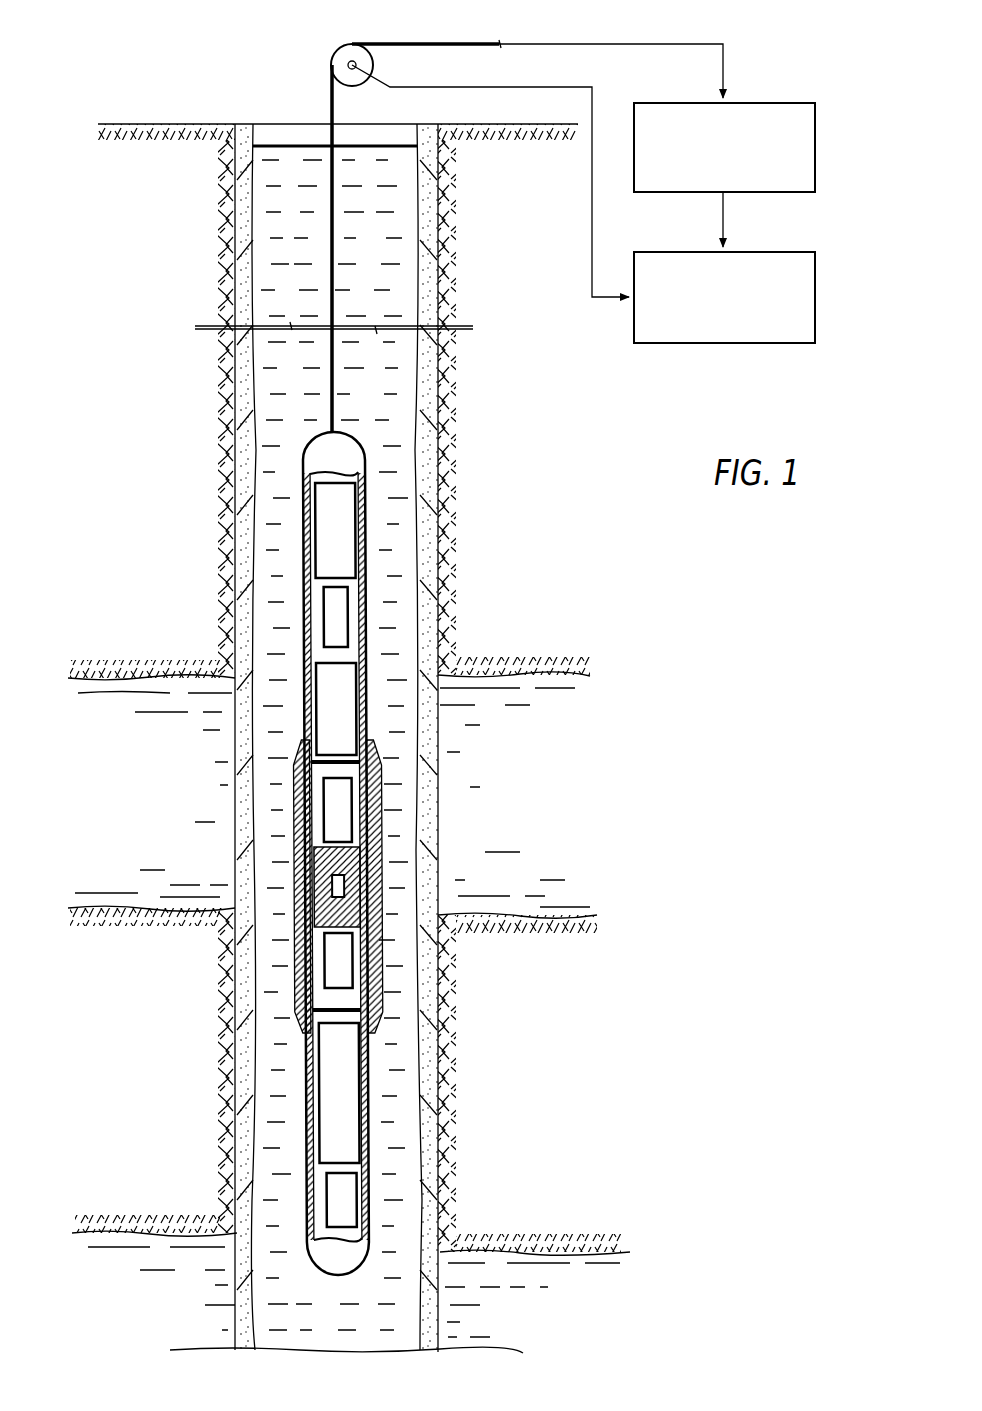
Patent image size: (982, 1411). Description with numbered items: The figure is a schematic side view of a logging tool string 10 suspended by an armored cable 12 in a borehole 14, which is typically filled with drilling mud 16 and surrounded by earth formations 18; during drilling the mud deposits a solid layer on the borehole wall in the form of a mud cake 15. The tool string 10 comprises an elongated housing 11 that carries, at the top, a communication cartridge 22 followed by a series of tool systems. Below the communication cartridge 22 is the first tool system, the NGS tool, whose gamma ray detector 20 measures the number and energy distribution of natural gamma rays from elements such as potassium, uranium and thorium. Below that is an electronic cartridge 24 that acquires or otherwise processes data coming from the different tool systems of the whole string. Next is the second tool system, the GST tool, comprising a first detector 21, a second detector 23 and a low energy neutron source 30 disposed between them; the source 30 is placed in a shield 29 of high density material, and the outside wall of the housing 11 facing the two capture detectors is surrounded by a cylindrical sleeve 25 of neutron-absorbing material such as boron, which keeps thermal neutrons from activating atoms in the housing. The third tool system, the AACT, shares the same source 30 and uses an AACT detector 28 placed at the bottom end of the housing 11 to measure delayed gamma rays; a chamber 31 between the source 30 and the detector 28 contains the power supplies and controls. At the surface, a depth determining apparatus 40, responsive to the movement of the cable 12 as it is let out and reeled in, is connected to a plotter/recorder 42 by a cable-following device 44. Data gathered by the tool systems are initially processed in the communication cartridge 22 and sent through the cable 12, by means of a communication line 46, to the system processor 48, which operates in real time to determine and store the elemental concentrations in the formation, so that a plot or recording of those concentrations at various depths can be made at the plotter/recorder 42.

The logging tool string 10 is at (331, 838).
The elongated housing 11 is at (367, 482).
The armored cable 12 is at (330, 220).
The borehole 14 is at (275, 120).
The mud cake 15 is at (427, 1287).
The drilling mud 16 is at (282, 397).
The earth formations 18 is at (138, 670).
The gamma ray detector 20 is at (337, 605).
The first detector 21 is at (345, 792).
The communication cartridge 22 is at (345, 510).
The second detector 23 is at (345, 960).
The electronic cartridge 24 is at (345, 690).
The cylindrical sleeve 25 is at (297, 960).
The AACT detector 28 is at (348, 1198).
The shield 29 is at (339, 860).
The low energy neutron source 30 is at (335, 882).
The chamber 31 is at (348, 1080).
The depth determining apparatus 40 is at (347, 62).
The plotter/recorder 42 is at (815, 298).
The cable-following device 44 is at (592, 228).
The communication line 46 is at (672, 44).
The system processor 48 is at (815, 145).